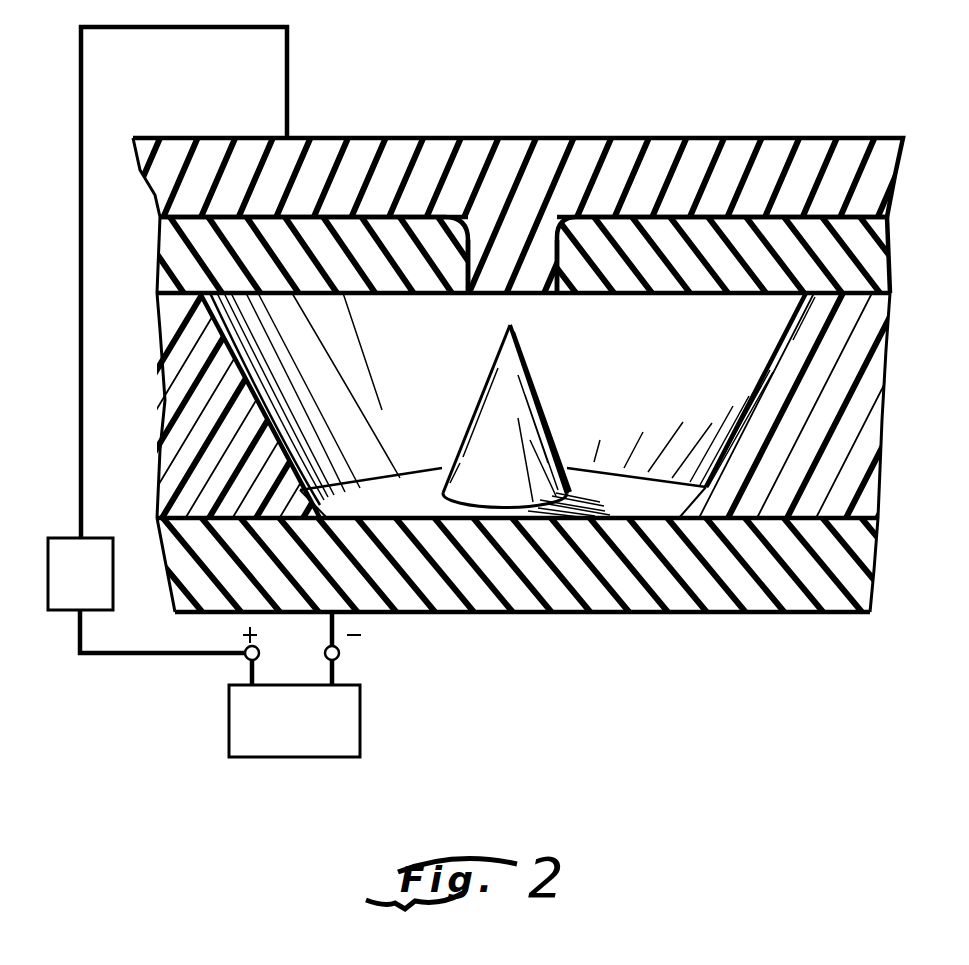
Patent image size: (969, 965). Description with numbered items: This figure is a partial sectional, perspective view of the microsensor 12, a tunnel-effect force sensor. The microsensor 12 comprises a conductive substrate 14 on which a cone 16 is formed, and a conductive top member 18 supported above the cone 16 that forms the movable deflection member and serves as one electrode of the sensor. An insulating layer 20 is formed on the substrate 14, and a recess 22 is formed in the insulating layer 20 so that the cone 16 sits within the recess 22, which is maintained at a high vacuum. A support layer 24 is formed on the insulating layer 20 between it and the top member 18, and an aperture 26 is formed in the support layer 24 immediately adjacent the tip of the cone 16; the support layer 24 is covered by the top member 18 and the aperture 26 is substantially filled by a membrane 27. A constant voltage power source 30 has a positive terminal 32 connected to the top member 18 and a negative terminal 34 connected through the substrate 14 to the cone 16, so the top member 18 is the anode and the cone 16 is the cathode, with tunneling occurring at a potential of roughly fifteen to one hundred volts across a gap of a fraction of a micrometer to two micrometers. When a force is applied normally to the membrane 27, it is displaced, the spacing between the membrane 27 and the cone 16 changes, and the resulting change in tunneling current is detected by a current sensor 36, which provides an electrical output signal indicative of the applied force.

The microsensor 12 is at (760, 100).
The conductive substrate 14 is at (703, 585).
The cone 16 is at (515, 408).
The conductive top member 18 is at (656, 180).
The insulating layer 20 is at (806, 512).
The recess 22 is at (695, 388).
The support layer 24 is at (372, 255).
The aperture 26 is at (469, 236).
The membrane 27 is at (499, 259).
The constant voltage power source 30 is at (302, 738).
The positive terminal 32 is at (262, 655).
The negative terminal 34 is at (340, 653).
The current sensor 36 is at (88, 590).